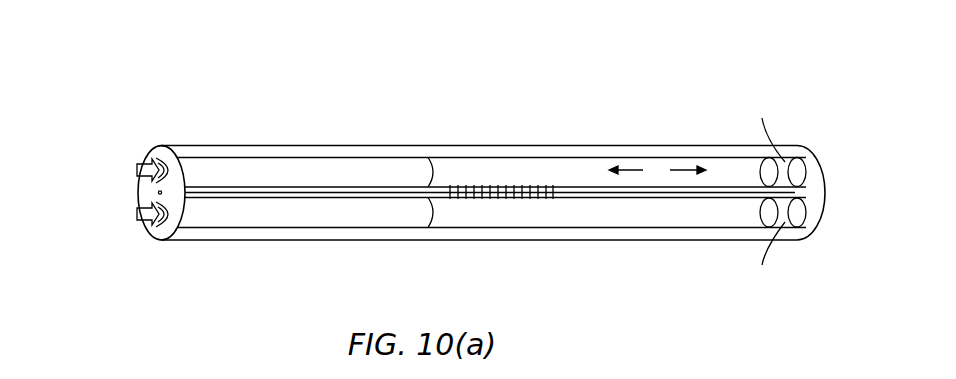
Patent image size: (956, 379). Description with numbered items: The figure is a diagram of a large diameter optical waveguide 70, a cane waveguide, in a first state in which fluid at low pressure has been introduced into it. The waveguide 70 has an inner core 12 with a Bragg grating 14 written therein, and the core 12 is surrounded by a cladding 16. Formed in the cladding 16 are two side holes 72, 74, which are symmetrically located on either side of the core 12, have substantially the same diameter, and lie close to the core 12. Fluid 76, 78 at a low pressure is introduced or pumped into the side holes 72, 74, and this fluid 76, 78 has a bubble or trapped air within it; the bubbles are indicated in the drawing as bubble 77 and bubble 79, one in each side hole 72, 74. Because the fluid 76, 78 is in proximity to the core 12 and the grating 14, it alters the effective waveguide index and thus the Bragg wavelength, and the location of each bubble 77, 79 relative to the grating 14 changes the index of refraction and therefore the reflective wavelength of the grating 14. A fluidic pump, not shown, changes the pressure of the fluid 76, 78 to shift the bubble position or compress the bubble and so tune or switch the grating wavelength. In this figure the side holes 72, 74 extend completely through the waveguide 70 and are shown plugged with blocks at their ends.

The large diameter optical waveguide 70 is at (243, 83).
The side hole 72 is at (150, 184).
The side hole 74 is at (165, 228).
The fluid 76 is at (218, 173).
The fluid 78 is at (232, 218).
The cladding 16 is at (298, 147).
The inner core 12 is at (357, 188).
The Bragg grating 14 is at (475, 187).
The bubble in upper chamber 77 is at (547, 175).
The bubble in lower chamber 79 is at (620, 210).